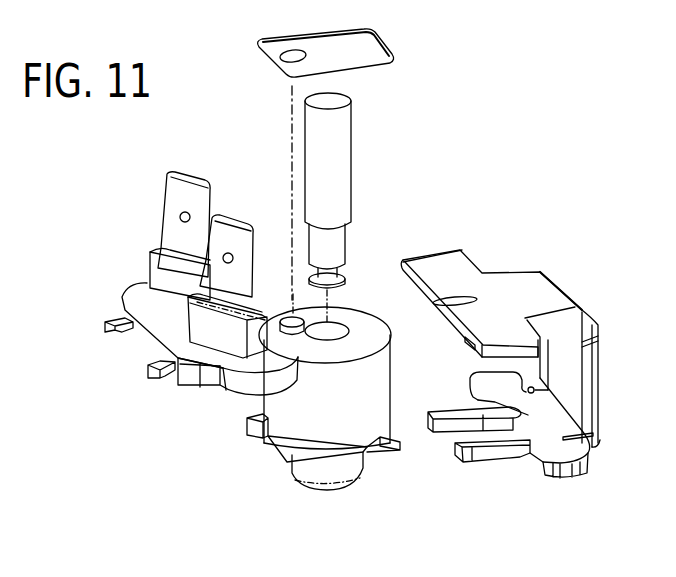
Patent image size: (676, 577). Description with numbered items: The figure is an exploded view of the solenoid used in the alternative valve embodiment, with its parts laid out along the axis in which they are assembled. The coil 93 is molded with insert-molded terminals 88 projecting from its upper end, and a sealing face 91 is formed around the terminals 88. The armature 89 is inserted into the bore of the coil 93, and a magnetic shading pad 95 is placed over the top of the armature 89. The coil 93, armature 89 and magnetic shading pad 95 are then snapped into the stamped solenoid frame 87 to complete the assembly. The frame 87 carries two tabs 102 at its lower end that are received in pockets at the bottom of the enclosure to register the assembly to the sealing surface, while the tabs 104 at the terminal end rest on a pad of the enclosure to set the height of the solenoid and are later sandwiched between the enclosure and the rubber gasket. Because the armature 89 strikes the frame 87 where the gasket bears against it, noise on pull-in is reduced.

The solenoid frame 87 is at (565, 284).
The terminals 88 is at (170, 226).
The armature 89 is at (352, 150).
The sealing face 91 is at (147, 280).
The coil 93 is at (358, 433).
The magnetic shading pad 95 is at (350, 40).
The tabs 102 is at (553, 477).
The tabs 104 is at (460, 252).